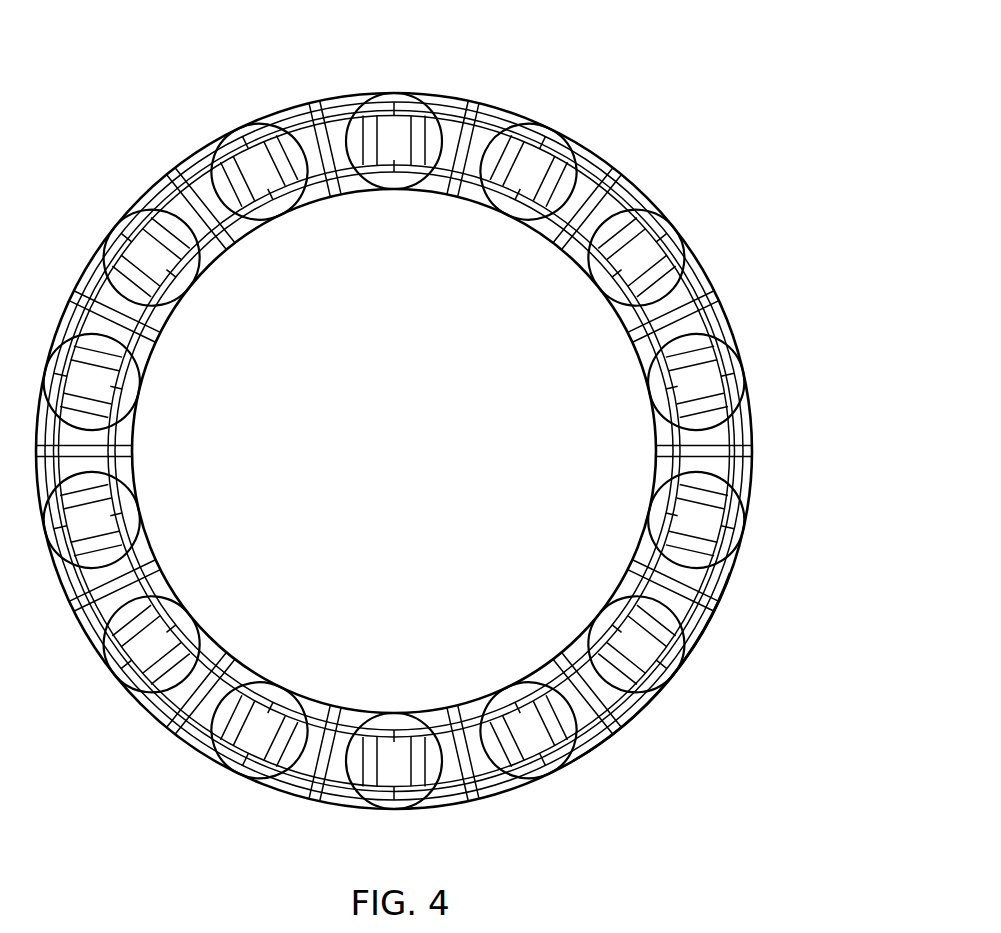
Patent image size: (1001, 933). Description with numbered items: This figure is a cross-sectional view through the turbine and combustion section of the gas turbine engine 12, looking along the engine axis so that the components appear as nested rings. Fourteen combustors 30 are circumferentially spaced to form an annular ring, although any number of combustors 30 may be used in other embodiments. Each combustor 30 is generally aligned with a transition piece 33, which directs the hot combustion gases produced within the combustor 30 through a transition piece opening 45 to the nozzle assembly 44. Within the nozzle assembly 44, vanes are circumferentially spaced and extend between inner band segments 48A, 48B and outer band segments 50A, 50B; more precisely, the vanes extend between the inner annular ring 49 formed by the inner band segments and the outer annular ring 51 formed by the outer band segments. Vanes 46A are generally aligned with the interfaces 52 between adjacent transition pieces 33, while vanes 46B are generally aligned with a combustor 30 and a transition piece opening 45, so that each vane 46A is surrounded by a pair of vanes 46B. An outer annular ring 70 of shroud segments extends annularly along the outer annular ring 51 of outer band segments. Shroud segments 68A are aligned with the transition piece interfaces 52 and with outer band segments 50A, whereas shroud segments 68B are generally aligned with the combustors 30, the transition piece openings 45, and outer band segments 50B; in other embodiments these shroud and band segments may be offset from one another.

The gas turbine engine 12 is at (647, 50).
The combustors 30 is at (488, 203).
The transition piece 33 is at (602, 153).
The nozzle assembly 44 is at (160, 716).
The transition piece opening 45 is at (580, 160).
The vanes 46A is at (315, 143).
The vanes 46B is at (408, 137).
The inner band segments 48A is at (463, 717).
The inner band segments 48B is at (418, 713).
The inner annular ring 49 is at (120, 440).
The outer band segments 50A is at (490, 783).
The outer band segments 50B is at (565, 783).
The outer annular ring 51 is at (80, 527).
The transition piece interfaces 52 is at (493, 107).
The shroud segments 68A is at (640, 708).
The shroud segments 68B is at (683, 660).
The outer annular ring 70 is at (70, 579).